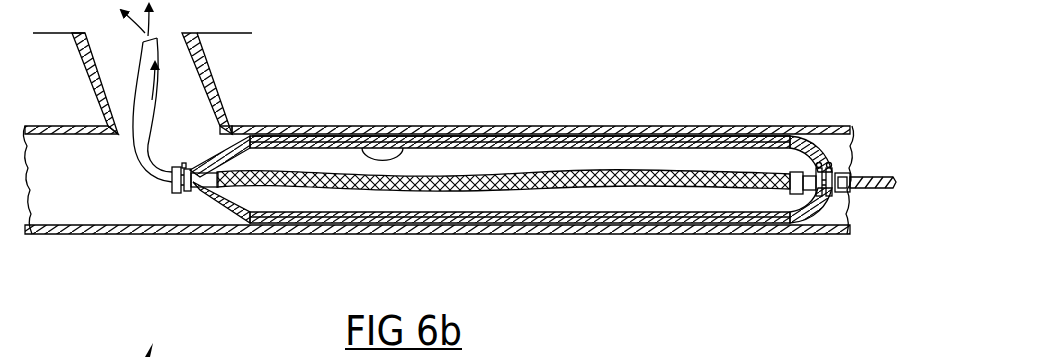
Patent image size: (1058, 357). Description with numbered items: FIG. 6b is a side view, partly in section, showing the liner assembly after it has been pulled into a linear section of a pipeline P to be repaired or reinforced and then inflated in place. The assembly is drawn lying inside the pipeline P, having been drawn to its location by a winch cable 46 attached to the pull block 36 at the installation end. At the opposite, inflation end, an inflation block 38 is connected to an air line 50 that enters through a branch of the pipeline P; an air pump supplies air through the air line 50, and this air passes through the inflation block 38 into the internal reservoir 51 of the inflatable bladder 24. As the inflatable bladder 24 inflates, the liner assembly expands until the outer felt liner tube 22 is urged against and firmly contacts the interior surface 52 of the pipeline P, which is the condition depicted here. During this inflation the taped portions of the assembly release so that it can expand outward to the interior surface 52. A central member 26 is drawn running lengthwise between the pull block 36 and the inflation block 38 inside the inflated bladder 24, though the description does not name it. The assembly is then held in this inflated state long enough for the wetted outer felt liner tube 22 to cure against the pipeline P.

The pipeline P is at (465, 233).
The outer felt liner tube 22 is at (696, 127).
The inflatable bladder 24 is at (683, 147).
The braided hose 26 is at (313, 184).
The pull block 36 is at (790, 178).
The inflation block 38 is at (178, 166).
The winch cable 46 is at (880, 190).
The air line 50 is at (145, 100).
The internal reservoir 51 is at (572, 150).
The interior surface 52 is at (344, 134).